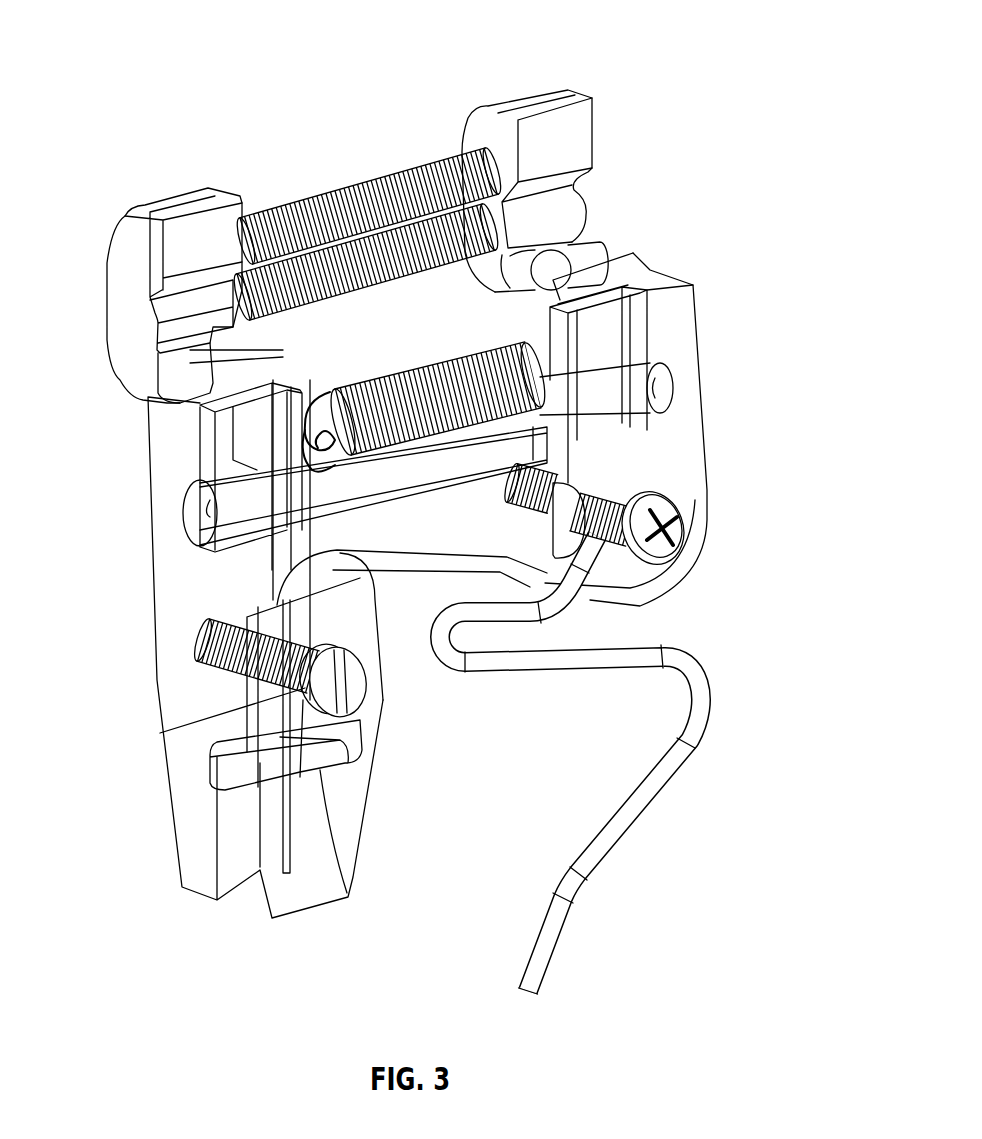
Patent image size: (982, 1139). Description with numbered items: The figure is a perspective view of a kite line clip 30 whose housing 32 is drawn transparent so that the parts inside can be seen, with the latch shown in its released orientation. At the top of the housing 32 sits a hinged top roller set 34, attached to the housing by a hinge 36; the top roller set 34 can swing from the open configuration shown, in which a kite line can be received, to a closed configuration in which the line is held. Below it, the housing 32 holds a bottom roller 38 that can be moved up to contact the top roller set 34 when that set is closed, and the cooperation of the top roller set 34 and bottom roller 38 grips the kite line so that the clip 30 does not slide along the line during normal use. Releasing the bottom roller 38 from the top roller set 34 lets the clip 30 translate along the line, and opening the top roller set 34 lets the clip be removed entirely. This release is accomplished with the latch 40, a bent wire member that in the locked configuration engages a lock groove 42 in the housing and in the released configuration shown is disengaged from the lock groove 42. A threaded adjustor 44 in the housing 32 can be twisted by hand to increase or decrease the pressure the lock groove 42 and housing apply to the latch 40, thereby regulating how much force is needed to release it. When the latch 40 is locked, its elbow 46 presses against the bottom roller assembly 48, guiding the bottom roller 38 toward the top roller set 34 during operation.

The clip 30 is at (566, 56).
The housing 32 is at (698, 322).
The hinged top roller set 34 is at (595, 137).
The hinge 36 is at (598, 250).
The bottom roller 38 is at (518, 373).
The latch 40 is at (630, 790).
The lock groove 42 is at (243, 787).
The threaded adjustor 44 is at (203, 640).
The elbow 46 is at (455, 672).
The bottom roller assembly 48 is at (520, 448).